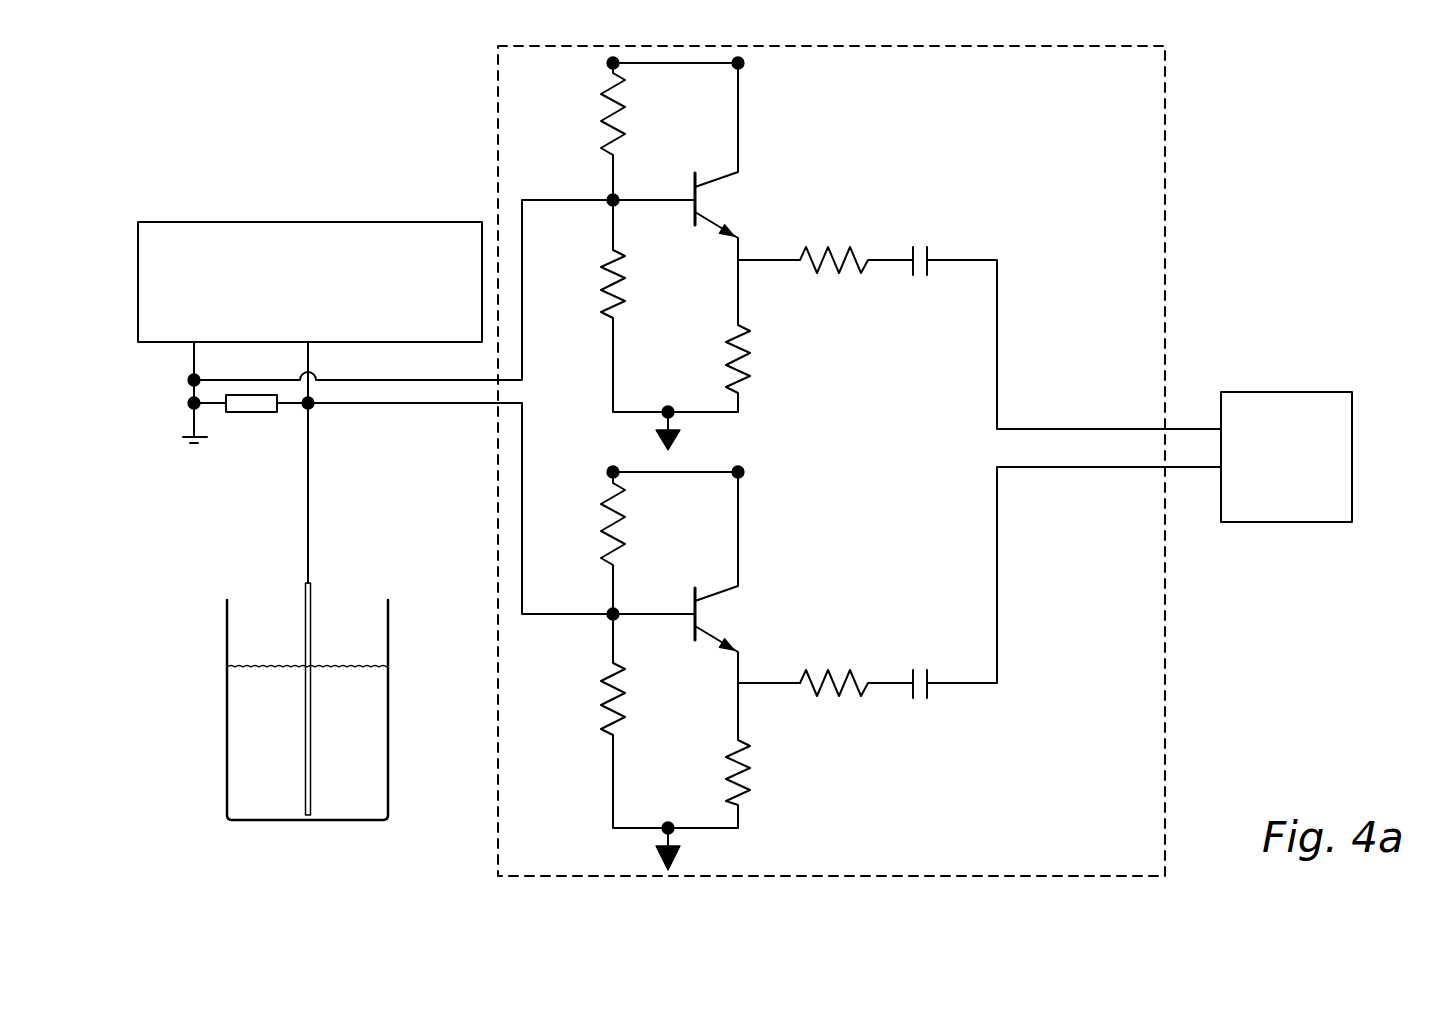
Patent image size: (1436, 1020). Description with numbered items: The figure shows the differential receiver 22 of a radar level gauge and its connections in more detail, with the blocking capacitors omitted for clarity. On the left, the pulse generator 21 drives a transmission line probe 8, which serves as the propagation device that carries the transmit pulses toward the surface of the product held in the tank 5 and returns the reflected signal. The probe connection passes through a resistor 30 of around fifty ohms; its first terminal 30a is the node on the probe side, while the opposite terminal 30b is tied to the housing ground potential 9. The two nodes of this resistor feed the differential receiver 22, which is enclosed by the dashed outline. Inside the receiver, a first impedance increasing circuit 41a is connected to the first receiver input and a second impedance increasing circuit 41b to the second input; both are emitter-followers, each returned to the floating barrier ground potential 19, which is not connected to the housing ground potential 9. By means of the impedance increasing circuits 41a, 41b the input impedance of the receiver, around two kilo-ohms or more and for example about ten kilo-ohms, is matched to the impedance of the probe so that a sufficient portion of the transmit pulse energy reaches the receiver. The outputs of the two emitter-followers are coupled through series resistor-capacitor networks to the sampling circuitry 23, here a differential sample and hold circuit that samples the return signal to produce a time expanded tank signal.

The pulse generator 21 is at (292, 232).
The second terminal of shunt resistor 30b is at (190, 402).
The housing ground potential 9 is at (182, 437).
The resistor 30 is at (252, 414).
The first terminal of the resistor 30a is at (312, 412).
The transmission line probe 8 is at (310, 614).
The liquid sample in vessel 5 is at (390, 643).
The differential receiver 22 is at (1165, 783).
The first impedance increasing circuit 41a is at (770, 187).
The second impedance increasing circuit 41b is at (752, 622).
The barrier ground potential 19 is at (673, 420).
The sampling circuitry 23 is at (1279, 403).